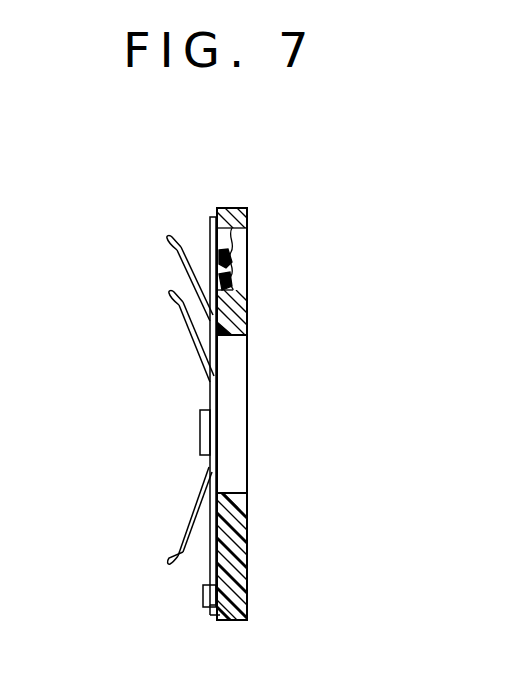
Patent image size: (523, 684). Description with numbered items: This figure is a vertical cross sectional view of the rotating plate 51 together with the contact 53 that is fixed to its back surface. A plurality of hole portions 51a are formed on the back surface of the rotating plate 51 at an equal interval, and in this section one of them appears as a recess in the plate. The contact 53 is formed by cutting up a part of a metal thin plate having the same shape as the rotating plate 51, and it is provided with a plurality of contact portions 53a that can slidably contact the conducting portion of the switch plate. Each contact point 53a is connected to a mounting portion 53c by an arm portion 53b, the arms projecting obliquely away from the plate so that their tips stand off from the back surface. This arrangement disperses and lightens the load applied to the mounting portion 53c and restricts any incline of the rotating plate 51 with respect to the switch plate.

The rotating plate 51 is at (258, 341).
The hole portion 51a is at (236, 256).
The contact 53 is at (203, 228).
The contact portion 53a is at (166, 242).
The arm portion 53b is at (182, 266).
The mounting portion 53c is at (208, 557).